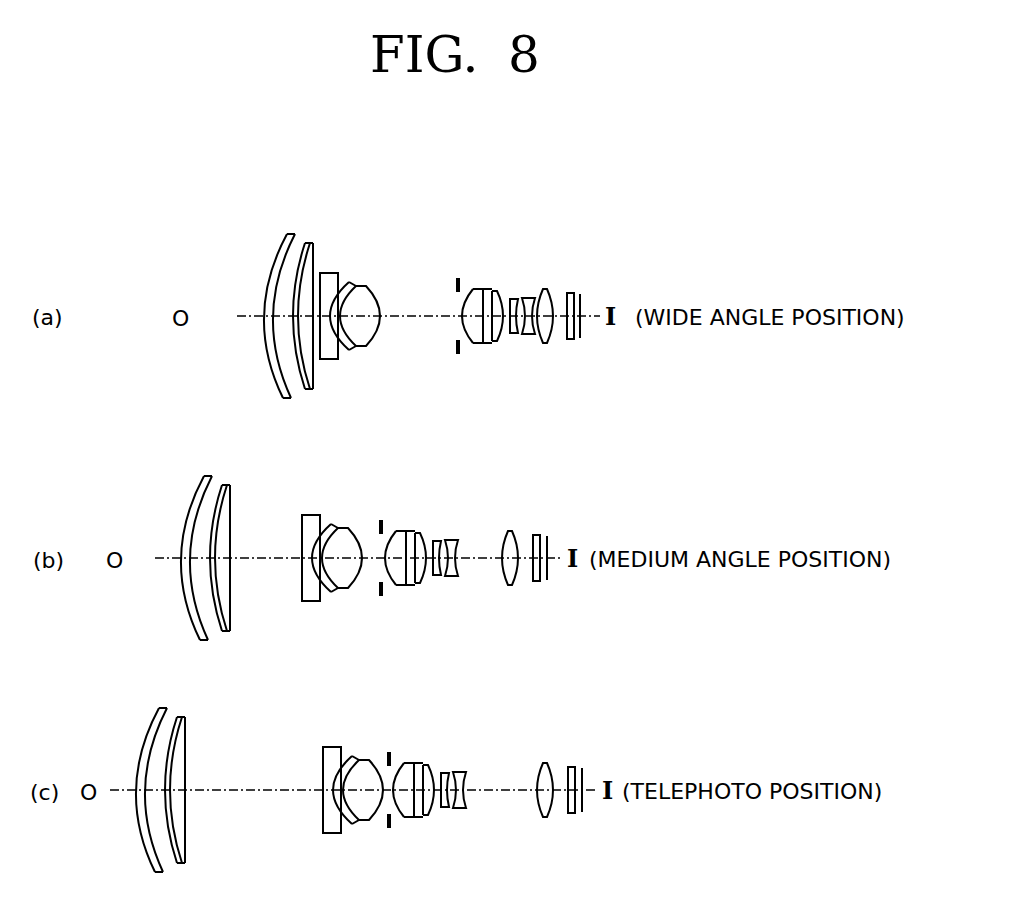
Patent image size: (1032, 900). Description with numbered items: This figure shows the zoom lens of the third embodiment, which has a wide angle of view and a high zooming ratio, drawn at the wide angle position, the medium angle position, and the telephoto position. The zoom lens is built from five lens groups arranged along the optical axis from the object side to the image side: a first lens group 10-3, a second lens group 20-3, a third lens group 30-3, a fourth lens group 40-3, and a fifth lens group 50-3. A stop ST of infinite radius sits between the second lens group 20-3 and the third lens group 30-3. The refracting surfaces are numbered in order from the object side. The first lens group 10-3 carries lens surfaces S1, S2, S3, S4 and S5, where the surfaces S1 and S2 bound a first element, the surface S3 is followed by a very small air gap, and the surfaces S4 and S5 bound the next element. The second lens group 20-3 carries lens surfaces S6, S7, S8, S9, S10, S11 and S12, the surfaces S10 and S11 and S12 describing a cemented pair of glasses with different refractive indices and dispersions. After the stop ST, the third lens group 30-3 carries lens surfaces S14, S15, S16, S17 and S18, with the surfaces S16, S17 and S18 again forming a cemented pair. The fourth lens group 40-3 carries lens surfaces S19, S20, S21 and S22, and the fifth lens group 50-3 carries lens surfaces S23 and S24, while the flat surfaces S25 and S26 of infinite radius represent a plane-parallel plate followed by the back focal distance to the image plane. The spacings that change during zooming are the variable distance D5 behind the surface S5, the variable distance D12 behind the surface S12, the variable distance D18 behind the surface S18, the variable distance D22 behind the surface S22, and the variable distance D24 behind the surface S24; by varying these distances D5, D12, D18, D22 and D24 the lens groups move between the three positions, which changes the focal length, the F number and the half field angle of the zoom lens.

The first lens group 10-3 is at (313, 204).
The second lens group 20-3 is at (378, 204).
The third lens group 30-3 is at (500, 204).
The fourth lens group 40-3 is at (535, 204).
The fifth lens group 50-3 is at (563, 204).
The stop ST is at (456, 276).
The variable distance D5 is at (313, 320).
The variable distance D12 is at (399, 320).
The variable distance D18 is at (501, 343).
The variable distance D22 is at (540, 337).
The variable distance D24 is at (558, 337).
The lens surface S1 is at (183, 593).
The lens surface S2 is at (193, 605).
The lens surface S3 is at (201, 587).
The lens surface S4 is at (212, 533).
The lens surface S5 is at (232, 612).
The lens surface S6 is at (300, 572).
The lens surface S7 is at (313, 594).
The lens surface S8 is at (310, 590).
The lens surface S9 is at (303, 540).
The lens surface S10 is at (315, 535).
The lens surface S11 is at (350, 530).
The lens surface S12 is at (368, 578).
The lens surface S14 is at (385, 578).
The lens surface S15 is at (404, 534).
The lens surface S16 is at (427, 582).
The lens surface S17 is at (427, 537).
The lens surface S18 is at (440, 580).
The lens surface S19 is at (445, 543).
The lens surface S20 is at (450, 577).
The lens surface S21 is at (618, 467).
The lens surface S22 is at (457, 552).
The lens surface S23 is at (508, 577).
The lens surface S24 is at (518, 565).
The lens surface S25 is at (546, 535).
The lens surface S26 is at (548, 550).